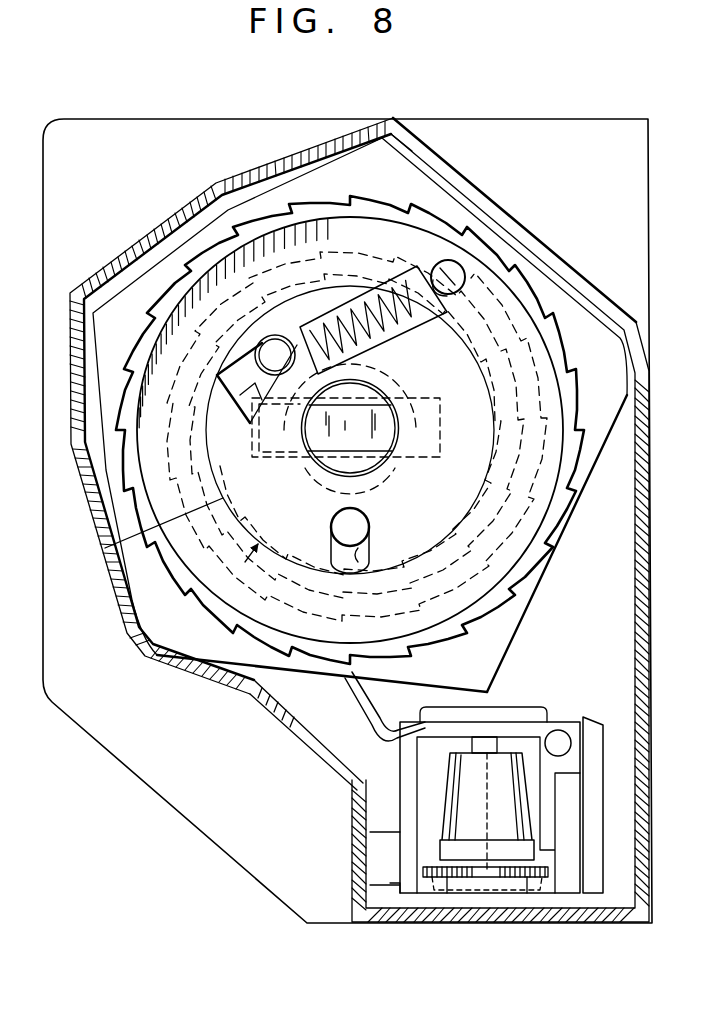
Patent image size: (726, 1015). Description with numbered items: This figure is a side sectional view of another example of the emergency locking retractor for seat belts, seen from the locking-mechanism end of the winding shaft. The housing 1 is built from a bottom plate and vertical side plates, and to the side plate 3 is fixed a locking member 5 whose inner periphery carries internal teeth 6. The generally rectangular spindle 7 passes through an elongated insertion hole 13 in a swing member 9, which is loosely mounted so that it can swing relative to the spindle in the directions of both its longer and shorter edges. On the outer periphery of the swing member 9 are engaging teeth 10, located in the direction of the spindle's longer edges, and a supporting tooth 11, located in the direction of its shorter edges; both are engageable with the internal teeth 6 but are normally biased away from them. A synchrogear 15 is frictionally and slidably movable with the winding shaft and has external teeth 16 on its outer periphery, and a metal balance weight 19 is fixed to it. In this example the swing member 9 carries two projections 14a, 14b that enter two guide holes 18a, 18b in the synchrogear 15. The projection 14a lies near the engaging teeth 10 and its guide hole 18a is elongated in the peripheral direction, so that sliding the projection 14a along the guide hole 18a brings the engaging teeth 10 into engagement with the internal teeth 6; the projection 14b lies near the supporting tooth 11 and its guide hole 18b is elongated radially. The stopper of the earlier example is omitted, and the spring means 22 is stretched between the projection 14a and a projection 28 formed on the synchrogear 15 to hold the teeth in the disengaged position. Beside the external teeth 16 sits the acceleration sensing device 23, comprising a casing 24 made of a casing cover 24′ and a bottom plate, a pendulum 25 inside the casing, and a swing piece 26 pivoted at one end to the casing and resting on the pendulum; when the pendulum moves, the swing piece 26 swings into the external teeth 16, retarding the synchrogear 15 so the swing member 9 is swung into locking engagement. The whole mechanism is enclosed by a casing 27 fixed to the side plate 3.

The housing 1 is at (508, 117).
The side plate 3 is at (591, 132).
The locking member 5 is at (388, 153).
The internal teeth 6 is at (588, 318).
The spindle 7 is at (418, 458).
The swing member 9 is at (213, 661).
The engaging teeth 10 is at (185, 503).
The supporting tooth 11 is at (516, 587).
The insertion hole 13 is at (357, 436).
The projection 14a is at (275, 355).
The projection 14b is at (343, 529).
The synchrogear 15 is at (203, 609).
The external teeth 16 is at (187, 582).
The guide hole 18a is at (236, 393).
The guide hole 18b is at (366, 560).
The balance weight 19 is at (283, 245).
The spring means 22 is at (408, 280).
The acceleration sensing device 23 is at (570, 710).
The casing 24 is at (402, 867).
The casing cover 24′ is at (403, 817).
The pendulum 25 is at (460, 793).
The swing piece 26 is at (483, 730).
The casing 27 is at (287, 717).
The projection 28 is at (460, 272).